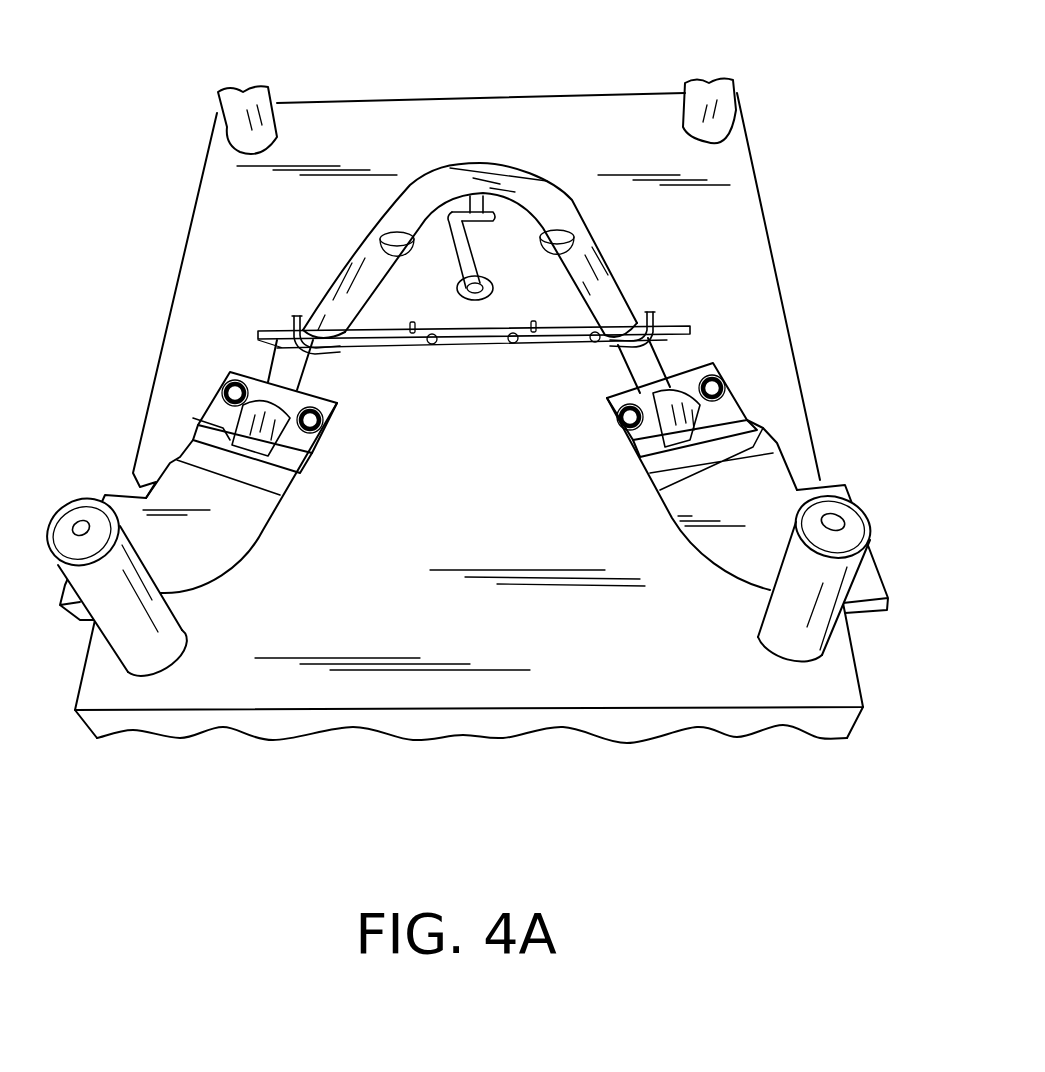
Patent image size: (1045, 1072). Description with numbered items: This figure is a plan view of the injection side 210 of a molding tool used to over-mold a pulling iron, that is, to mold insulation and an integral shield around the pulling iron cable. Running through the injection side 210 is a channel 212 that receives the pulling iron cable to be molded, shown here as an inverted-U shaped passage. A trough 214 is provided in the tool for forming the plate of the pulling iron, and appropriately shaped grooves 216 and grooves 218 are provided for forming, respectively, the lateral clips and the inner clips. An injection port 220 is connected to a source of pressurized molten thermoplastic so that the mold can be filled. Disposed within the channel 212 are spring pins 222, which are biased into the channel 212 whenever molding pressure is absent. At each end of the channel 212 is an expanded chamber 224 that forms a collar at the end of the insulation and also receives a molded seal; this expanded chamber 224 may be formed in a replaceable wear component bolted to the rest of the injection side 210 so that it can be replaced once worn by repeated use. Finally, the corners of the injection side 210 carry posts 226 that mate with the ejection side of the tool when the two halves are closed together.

The injection side 210 is at (802, 146).
The channel 212 is at (618, 283).
The trough 214 is at (473, 334).
The grooves 216 is at (296, 316).
The grooves 218 is at (413, 320).
The injection port 220 is at (457, 214).
The spring pins 222 is at (397, 232).
The expanded chamber 224 is at (327, 470).
The posts 226 is at (137, 650).